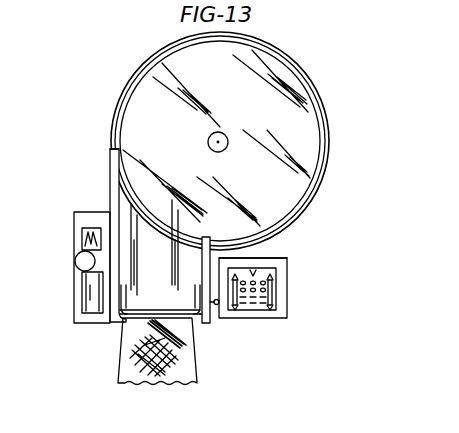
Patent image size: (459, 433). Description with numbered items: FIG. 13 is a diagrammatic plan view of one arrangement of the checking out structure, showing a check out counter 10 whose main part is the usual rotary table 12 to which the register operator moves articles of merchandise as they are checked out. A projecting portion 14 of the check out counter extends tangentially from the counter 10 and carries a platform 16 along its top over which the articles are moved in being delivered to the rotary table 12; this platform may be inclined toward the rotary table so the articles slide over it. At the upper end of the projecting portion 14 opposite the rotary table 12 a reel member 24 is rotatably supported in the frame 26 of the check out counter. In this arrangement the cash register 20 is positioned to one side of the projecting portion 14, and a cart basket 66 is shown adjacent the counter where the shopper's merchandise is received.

The check out counter 10 is at (216, 215).
The rotary table 12 is at (304, 125).
The projecting portion 14 is at (186, 312).
The platform 16 is at (163, 299).
The cash register 20 is at (287, 291).
The reel member 24 is at (183, 320).
The frame 26 is at (240, 259).
The basket 66 is at (195, 378).